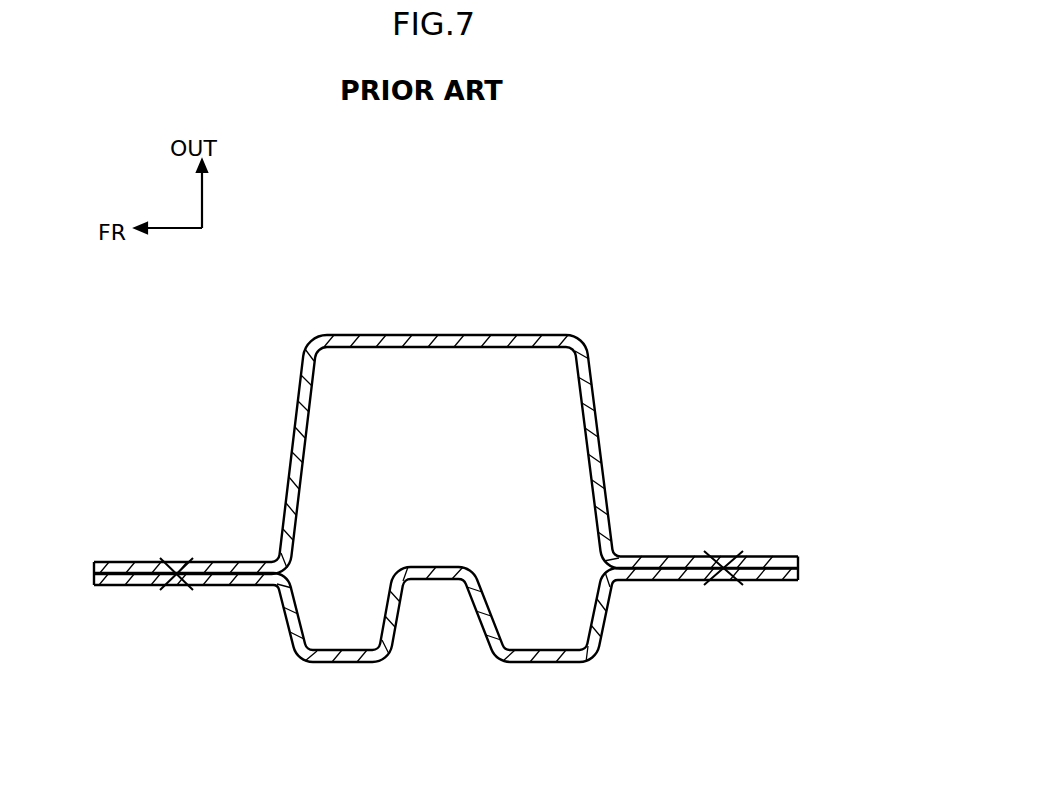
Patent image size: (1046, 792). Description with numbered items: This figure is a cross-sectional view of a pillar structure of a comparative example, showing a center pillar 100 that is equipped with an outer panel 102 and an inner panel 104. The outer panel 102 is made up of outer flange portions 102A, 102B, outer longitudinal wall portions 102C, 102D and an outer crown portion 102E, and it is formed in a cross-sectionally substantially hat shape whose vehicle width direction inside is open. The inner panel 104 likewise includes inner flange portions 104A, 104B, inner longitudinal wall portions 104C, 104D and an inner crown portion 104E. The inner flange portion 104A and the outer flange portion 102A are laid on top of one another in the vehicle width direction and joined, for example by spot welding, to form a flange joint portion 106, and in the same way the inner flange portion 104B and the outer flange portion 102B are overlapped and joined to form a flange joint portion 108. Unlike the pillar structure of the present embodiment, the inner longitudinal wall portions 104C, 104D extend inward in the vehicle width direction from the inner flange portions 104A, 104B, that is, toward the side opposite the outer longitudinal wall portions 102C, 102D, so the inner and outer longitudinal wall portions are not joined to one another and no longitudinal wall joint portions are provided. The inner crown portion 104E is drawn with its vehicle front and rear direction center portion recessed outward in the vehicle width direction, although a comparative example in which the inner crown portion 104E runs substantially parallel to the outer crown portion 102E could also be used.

The center pillar 100 is at (608, 292).
The outer panel 102 is at (441, 332).
The outer flange portion 102A is at (228, 562).
The outer flange portion 102B is at (672, 556).
The outer longitudinal wall portion 102C is at (304, 374).
The outer longitudinal wall portion 102D is at (592, 372).
The outer crown portion 102E is at (523, 334).
The inner panel 104 is at (374, 664).
The inner flange portion 104A is at (226, 586).
The inner flange portion 104B is at (672, 582).
The inner longitudinal wall portion 104C is at (286, 628).
The inner longitudinal wall portion 104D is at (608, 621).
The inner crown portion 104E is at (514, 661).
The flange joint portion 106 is at (176, 558).
The flange joint portion 108 is at (720, 552).